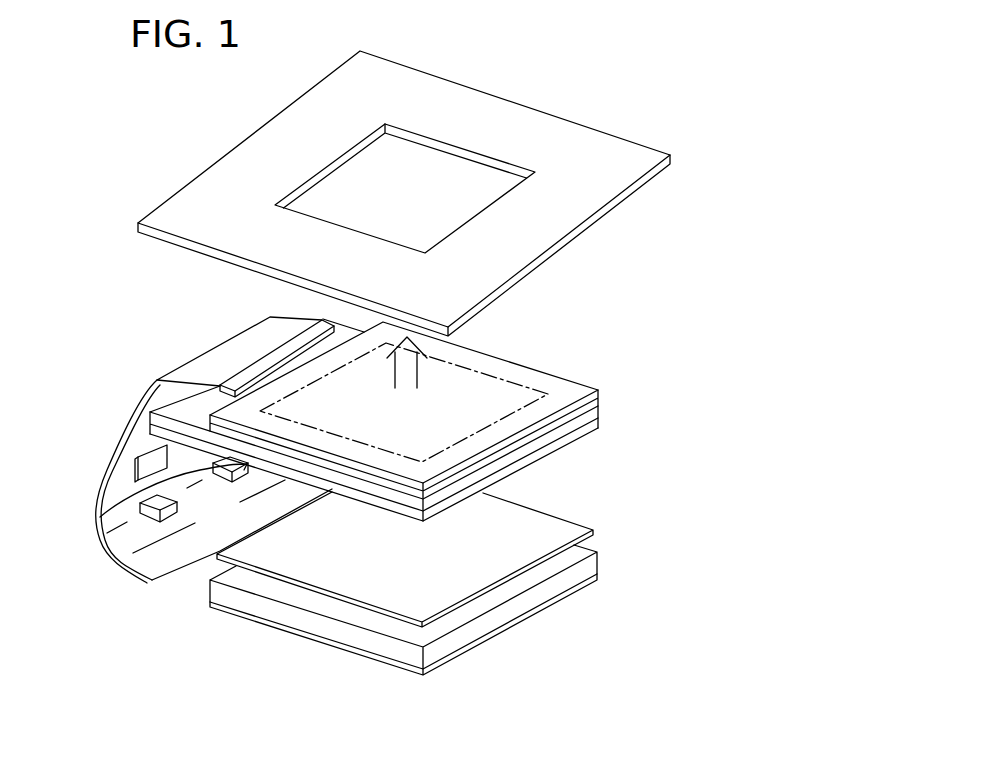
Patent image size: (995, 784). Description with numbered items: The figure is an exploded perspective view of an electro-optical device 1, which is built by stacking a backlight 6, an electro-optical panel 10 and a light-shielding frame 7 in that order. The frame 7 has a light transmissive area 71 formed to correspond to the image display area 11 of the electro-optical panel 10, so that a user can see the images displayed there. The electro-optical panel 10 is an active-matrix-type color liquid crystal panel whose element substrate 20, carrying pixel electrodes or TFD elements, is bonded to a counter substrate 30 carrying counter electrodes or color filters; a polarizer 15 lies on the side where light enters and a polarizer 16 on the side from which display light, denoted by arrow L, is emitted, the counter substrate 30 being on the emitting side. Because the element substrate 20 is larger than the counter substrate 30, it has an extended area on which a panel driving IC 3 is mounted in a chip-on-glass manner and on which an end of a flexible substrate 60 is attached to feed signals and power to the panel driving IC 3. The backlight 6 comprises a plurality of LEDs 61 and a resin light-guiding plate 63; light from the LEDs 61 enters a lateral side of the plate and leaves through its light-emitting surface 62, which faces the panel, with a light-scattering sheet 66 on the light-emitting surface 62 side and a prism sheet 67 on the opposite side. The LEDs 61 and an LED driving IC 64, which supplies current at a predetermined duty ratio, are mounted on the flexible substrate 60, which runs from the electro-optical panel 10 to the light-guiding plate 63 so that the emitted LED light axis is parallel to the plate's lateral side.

The electro-optical device 1 is at (99, 148).
The panel driving IC 3 is at (273, 362).
The backlight 6 is at (167, 718).
The light-shielding frame 7 is at (638, 187).
The electro-optical panel 10 is at (425, 414).
The image display area 11 is at (462, 362).
The polarizer 15 is at (598, 428).
The polarizer 16 is at (598, 390).
The element substrate 20 is at (597, 418).
The counter substrate 30 is at (598, 402).
The flexible substrate 60 is at (123, 422).
The LEDs 61 is at (213, 468).
The light-emitting surface 62 is at (287, 592).
The light-guiding plate 63 is at (211, 582).
The LED driving IC 64 is at (135, 475).
The light-scattering sheet 66 is at (213, 585).
The prism sheet 67 is at (210, 606).
The light transmissive area 71 is at (492, 162).
The display light L is at (413, 369).